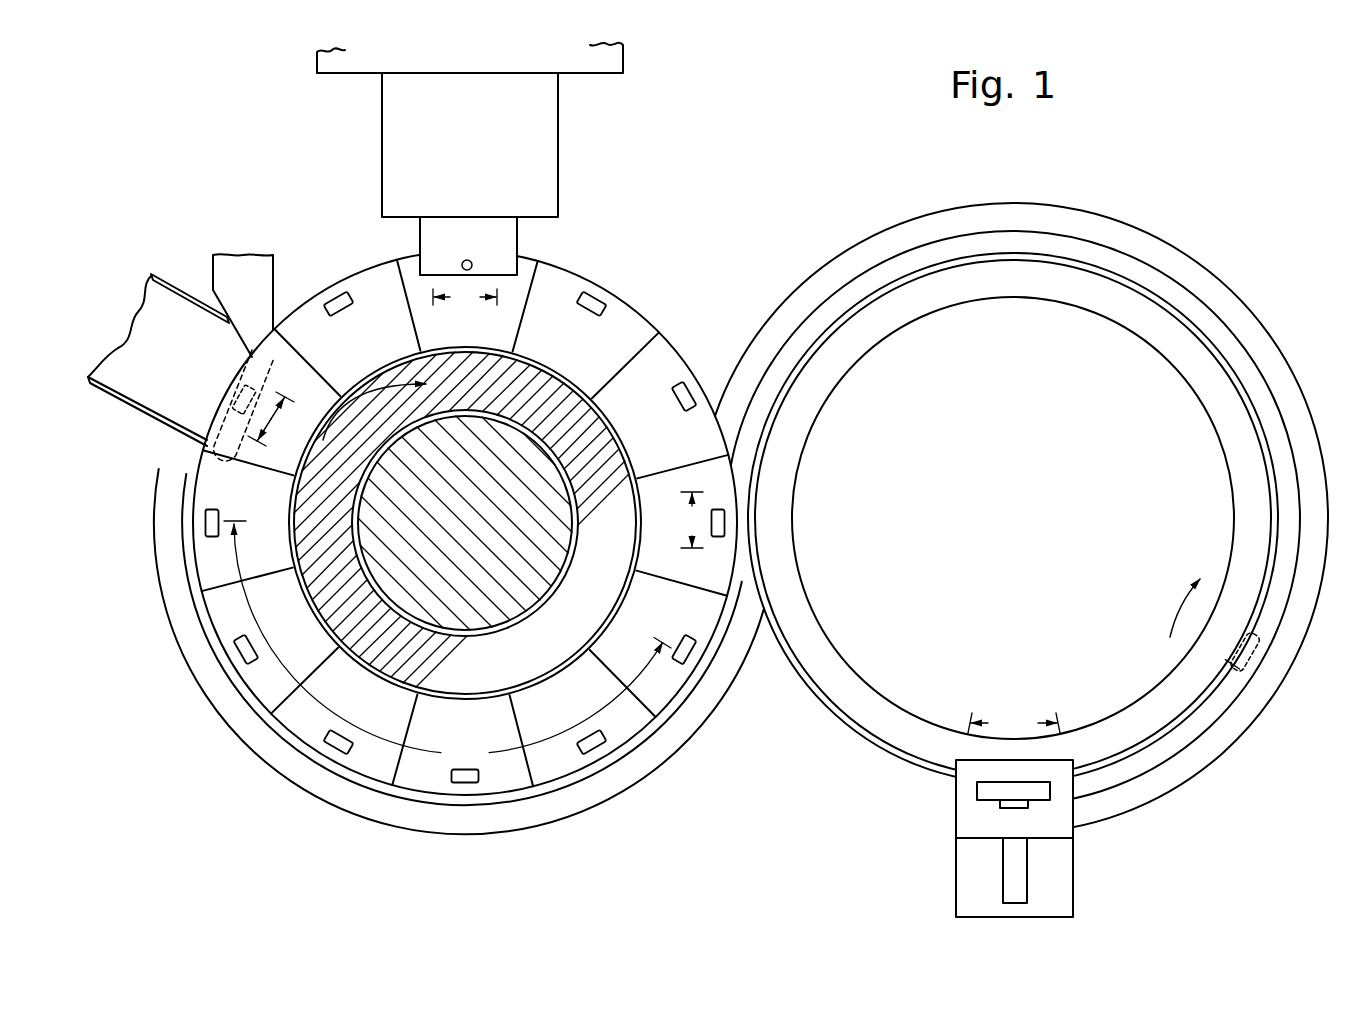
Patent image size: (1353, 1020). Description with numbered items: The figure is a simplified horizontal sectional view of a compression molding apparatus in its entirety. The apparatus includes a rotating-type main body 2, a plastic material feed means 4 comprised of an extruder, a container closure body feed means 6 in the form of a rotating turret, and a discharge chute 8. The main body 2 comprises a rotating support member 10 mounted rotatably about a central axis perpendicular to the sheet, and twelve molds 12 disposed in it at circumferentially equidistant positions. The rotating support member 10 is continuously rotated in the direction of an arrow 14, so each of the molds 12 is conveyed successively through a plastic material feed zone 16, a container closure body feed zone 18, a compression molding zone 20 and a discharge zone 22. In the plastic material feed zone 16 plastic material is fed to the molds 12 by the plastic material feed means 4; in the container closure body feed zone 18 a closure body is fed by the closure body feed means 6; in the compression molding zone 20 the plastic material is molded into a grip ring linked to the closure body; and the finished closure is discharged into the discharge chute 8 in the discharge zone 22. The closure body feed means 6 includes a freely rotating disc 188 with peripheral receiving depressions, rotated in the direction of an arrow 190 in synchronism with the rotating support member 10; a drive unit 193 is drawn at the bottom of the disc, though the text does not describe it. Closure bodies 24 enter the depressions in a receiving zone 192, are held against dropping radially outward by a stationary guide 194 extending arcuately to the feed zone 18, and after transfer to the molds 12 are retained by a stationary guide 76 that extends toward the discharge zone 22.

The main body 2 is at (435, 684).
The plastic material feed means 4 is at (561, 158).
The container closure body feed means 6 is at (1021, 503).
The discharge chute 8 is at (112, 392).
The rotating support member 10 is at (550, 368).
The molds 12 is at (637, 308).
The arrow 14 is at (397, 383).
The plastic material feed zone 16 is at (465, 298).
The container closure body feed zone 18 is at (692, 520).
The compression molding zone 20 is at (447, 642).
The discharge zone 22 is at (254, 405).
The closure bodies 24 is at (1246, 674).
The stationary guide 76 is at (455, 836).
The rotating disc 188 is at (1029, 535).
The arrow 190 is at (1176, 616).
The receiving zone 192 is at (1014, 723).
The motor 193 is at (953, 823).
The stationary guide 194 is at (1271, 331).